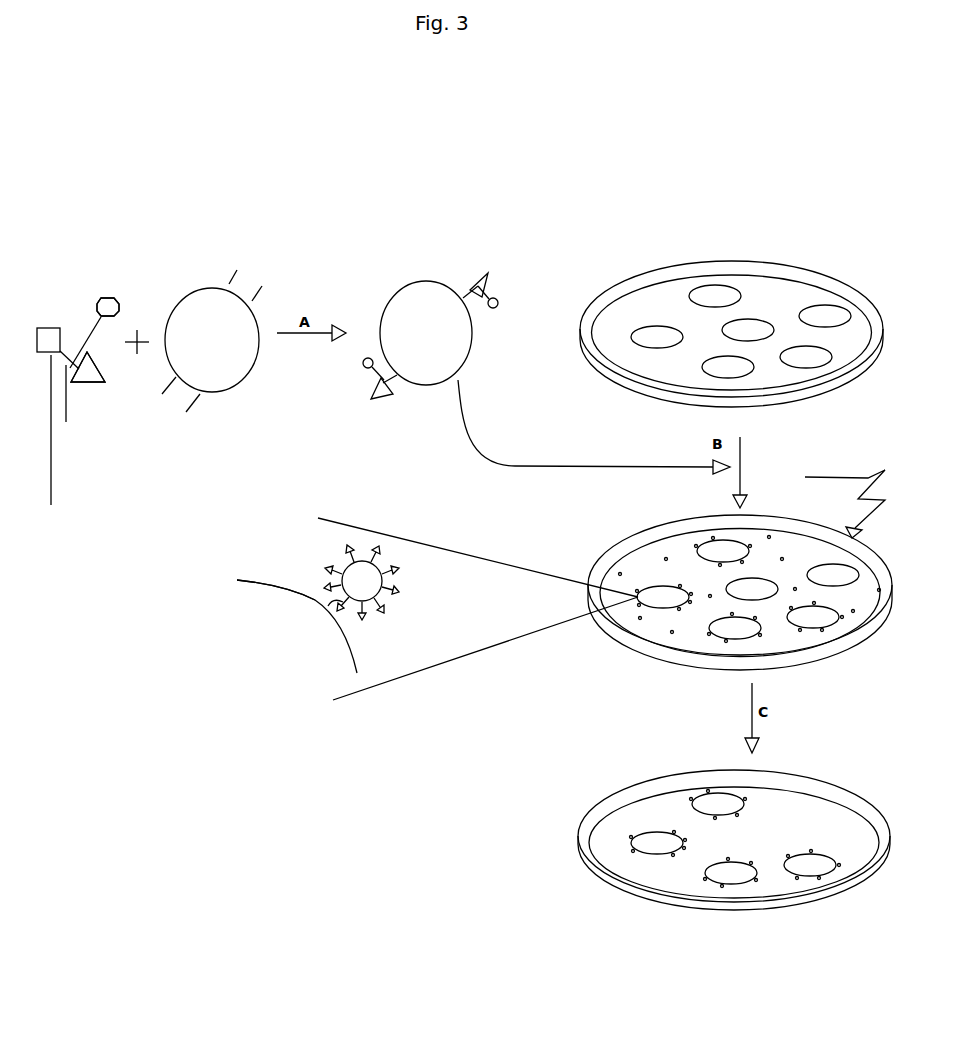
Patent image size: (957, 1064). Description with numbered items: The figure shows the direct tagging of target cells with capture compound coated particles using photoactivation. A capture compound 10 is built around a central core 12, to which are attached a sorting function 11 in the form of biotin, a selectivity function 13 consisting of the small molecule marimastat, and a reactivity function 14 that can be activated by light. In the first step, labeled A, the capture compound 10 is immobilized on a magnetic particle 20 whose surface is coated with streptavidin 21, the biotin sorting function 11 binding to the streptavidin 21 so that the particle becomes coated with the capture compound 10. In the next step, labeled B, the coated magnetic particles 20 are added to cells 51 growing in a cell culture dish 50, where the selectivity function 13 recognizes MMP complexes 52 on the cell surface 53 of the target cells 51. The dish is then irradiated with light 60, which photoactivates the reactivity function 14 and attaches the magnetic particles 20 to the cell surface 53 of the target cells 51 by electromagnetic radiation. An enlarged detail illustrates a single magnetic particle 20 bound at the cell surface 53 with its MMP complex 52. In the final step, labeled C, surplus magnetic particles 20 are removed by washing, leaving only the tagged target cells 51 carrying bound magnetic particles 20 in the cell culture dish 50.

The capture compound 10 is at (59, 311).
The sorting function 11 is at (52, 447).
The central core 12 is at (64, 410).
The selectivity function 13 is at (103, 393).
The reactivity function 14 is at (108, 297).
The magnetic particle 20 is at (202, 308).
The streptavidin 21 is at (197, 398).
The cell culture dish 50 is at (612, 340).
The target cells 51 is at (806, 357).
The MMP complexes 52 is at (338, 607).
The cell surface 53 is at (315, 600).
The light 60 is at (825, 504).